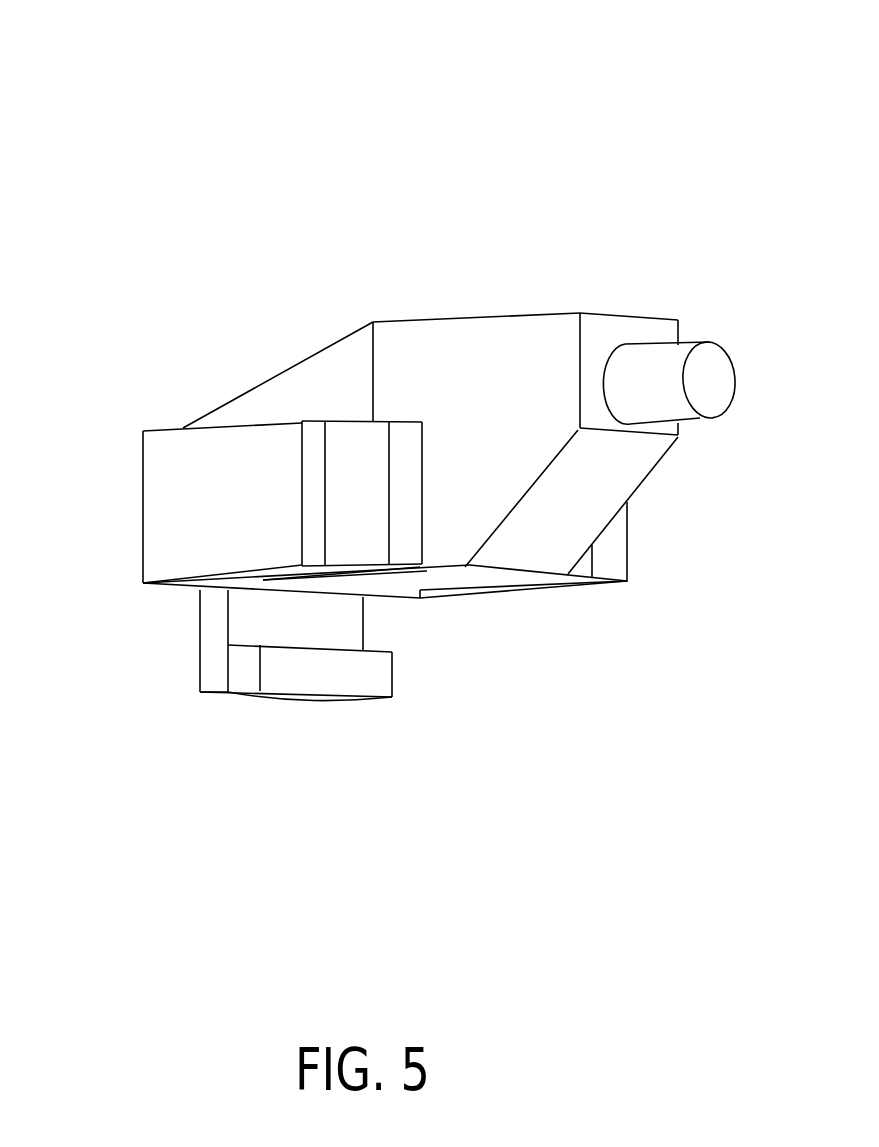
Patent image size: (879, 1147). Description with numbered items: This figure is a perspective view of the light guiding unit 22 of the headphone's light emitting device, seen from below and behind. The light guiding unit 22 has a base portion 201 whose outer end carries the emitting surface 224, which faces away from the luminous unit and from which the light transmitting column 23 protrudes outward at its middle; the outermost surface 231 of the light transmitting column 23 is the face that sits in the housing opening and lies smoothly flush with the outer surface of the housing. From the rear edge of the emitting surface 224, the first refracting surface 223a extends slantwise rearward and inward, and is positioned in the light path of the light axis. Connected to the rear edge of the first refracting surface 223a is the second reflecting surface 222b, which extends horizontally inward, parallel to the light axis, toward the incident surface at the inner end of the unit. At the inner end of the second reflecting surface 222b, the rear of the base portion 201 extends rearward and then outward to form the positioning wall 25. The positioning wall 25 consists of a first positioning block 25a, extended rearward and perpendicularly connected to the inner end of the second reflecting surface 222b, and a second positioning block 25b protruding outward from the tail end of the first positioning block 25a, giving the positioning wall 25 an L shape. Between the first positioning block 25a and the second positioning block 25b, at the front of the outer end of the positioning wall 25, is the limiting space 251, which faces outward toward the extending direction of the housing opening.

The light guiding unit 22 is at (90, 46).
The base portion 201 is at (418, 328).
The emitting surface 224 is at (653, 330).
The light transmitting column 23 is at (690, 343).
The outermost surface 231 is at (722, 375).
The first refracting surface 223a is at (636, 468).
The second reflecting surface 222b is at (400, 592).
The positioning wall 25 is at (185, 755).
The first positioning block 25a is at (207, 618).
The second positioning block 25b is at (245, 683).
The limiting space 251 is at (330, 638).